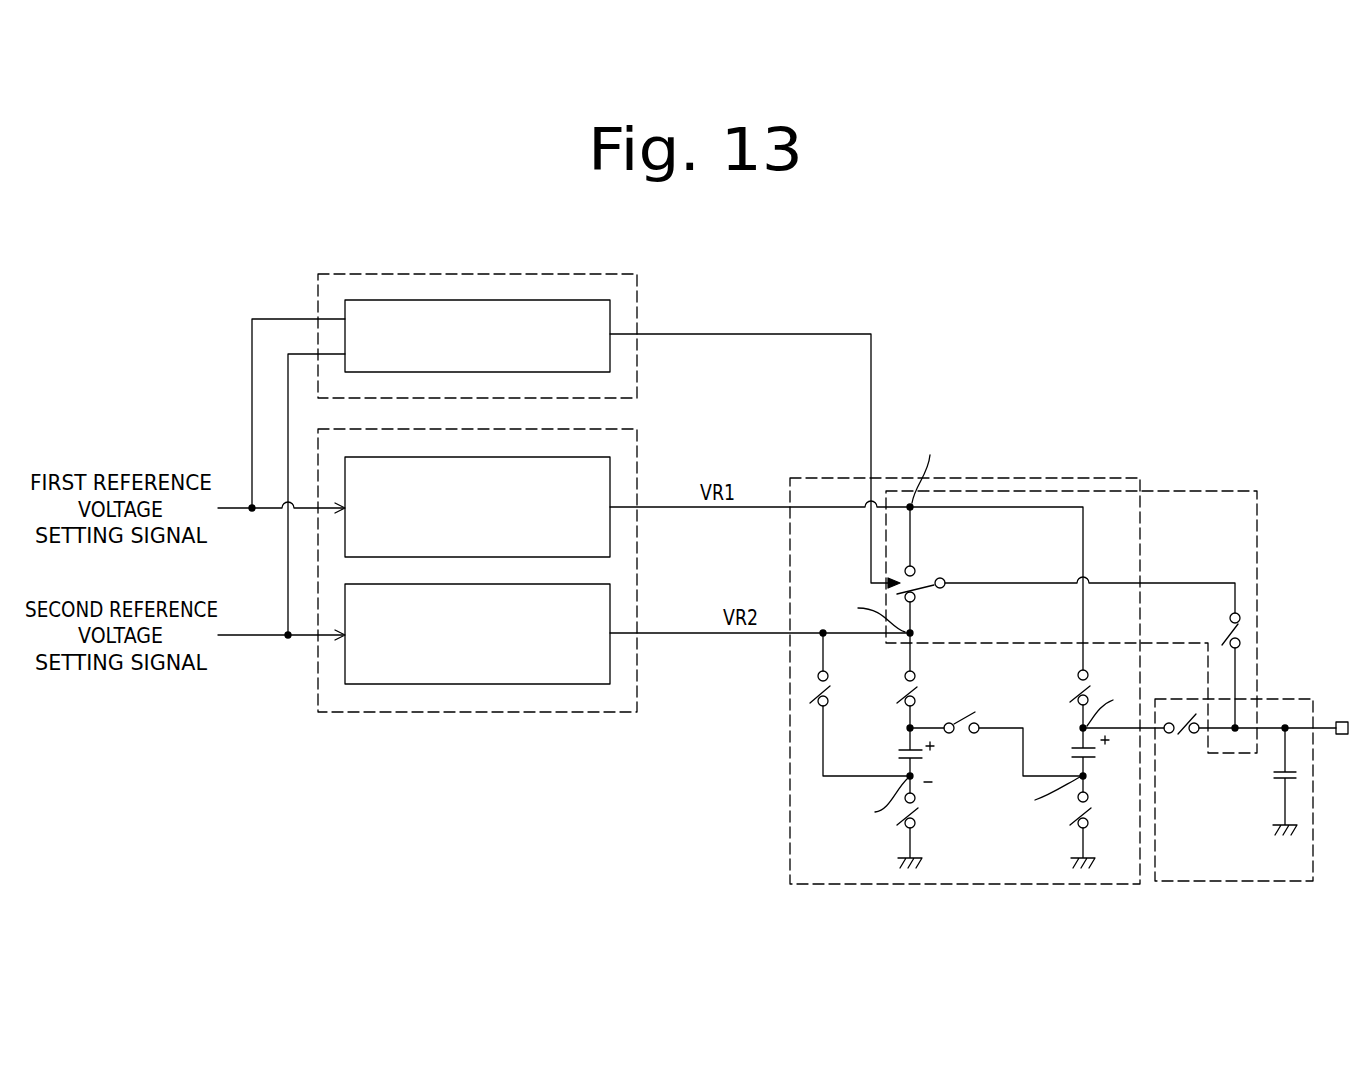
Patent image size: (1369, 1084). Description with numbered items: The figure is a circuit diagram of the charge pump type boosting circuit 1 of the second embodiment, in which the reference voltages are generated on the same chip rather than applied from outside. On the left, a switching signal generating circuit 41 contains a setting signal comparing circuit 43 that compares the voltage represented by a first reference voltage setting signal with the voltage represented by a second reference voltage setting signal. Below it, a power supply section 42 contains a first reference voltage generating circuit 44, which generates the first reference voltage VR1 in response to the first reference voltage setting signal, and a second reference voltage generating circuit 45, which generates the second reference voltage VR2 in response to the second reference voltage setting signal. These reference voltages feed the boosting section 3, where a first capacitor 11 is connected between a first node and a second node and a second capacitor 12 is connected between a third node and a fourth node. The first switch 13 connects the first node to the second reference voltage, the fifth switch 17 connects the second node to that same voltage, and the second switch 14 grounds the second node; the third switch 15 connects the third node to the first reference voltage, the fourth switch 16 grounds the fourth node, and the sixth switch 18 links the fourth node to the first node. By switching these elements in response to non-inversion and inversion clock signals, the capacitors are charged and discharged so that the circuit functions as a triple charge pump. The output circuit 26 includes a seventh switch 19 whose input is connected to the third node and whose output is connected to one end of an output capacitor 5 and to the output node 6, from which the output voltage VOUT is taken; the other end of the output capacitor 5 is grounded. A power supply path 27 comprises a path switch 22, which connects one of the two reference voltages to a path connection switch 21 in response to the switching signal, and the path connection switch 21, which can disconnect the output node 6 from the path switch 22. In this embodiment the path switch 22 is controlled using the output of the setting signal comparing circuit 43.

The charge pump type boosting circuit 1 is at (1218, 403).
The boosting section 3 is at (1100, 477).
The output capacitor 5 is at (1270, 772).
The output node 6 is at (1342, 715).
The first capacitor 11 is at (902, 748).
The second capacitor 12 is at (1072, 748).
The first switch 13 is at (918, 687).
The second switch 14 is at (920, 808).
The third switch 15 is at (1072, 690).
The fourth switch 16 is at (1072, 812).
The fifth switch 17 is at (833, 683).
The sixth switch 18 is at (970, 731).
The seventh switch 19 is at (1184, 735).
The path connection switch 21 is at (1225, 636).
The path switch 22 is at (920, 590).
The output circuit 26 is at (1305, 700).
The power supply path 27 is at (1232, 488).
The switching signal generating circuit 41 is at (565, 273).
The power supply section 42 is at (413, 713).
The setting signal comparing circuit 43 is at (477, 299).
The first reference voltage generating circuit 44 is at (610, 476).
The second reference voltage generating circuit 45 is at (478, 685).